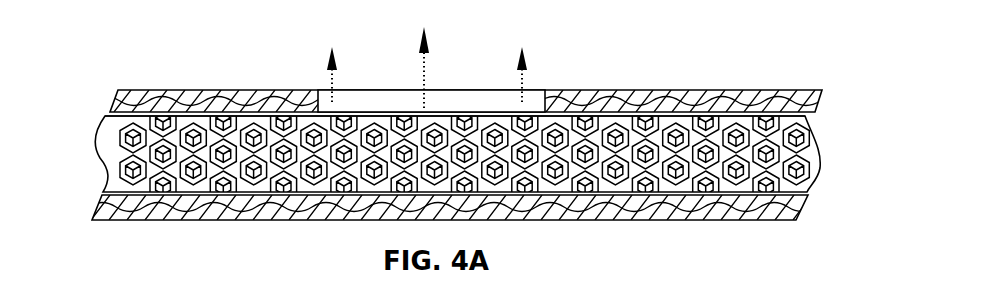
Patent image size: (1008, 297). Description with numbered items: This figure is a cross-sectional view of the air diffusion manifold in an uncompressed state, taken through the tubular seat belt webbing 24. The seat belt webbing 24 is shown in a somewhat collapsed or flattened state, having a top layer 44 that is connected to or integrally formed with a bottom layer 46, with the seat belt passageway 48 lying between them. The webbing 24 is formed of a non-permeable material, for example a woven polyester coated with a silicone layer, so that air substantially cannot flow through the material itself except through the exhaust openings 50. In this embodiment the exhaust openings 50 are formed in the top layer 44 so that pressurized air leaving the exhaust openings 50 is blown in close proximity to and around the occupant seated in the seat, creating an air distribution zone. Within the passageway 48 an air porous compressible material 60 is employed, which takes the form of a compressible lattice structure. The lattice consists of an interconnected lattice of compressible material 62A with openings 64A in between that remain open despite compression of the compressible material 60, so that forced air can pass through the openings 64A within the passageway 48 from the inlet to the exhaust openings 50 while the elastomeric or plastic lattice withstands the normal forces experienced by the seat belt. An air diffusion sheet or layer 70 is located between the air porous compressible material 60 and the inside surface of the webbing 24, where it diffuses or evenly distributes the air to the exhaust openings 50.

The tubular seat belt webbing 24 is at (482, 158).
The top layer 44 is at (655, 90).
The bottom layer 46 is at (683, 222).
The seat belt passageway 48 is at (481, 199).
The exhaust openings 50 is at (452, 100).
The air porous compressible material 60 is at (812, 177).
The compressible material 62A is at (145, 188).
The openings 64A is at (225, 154).
The air diffusion sheet or layer 70 is at (807, 117).